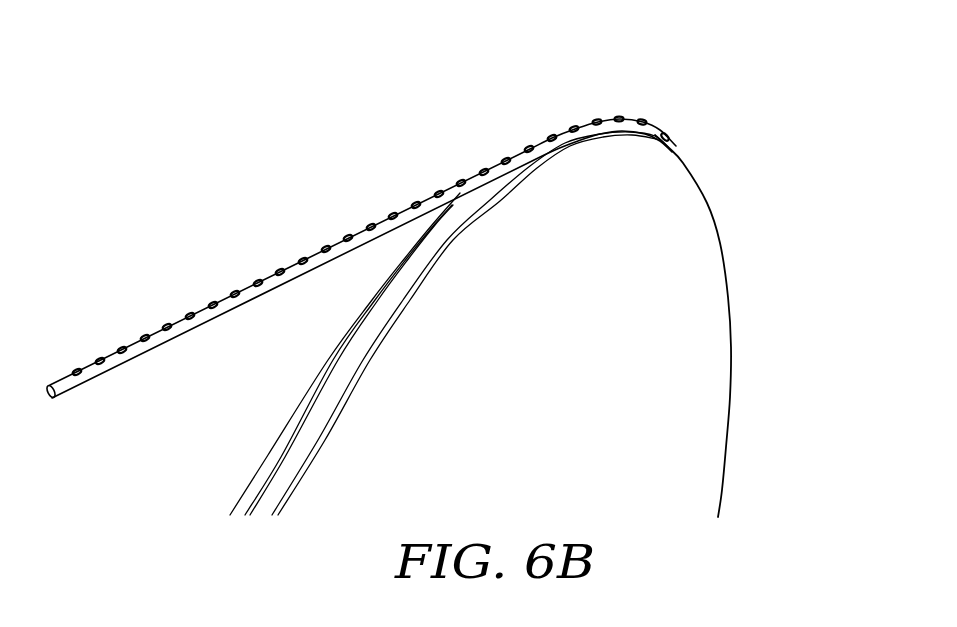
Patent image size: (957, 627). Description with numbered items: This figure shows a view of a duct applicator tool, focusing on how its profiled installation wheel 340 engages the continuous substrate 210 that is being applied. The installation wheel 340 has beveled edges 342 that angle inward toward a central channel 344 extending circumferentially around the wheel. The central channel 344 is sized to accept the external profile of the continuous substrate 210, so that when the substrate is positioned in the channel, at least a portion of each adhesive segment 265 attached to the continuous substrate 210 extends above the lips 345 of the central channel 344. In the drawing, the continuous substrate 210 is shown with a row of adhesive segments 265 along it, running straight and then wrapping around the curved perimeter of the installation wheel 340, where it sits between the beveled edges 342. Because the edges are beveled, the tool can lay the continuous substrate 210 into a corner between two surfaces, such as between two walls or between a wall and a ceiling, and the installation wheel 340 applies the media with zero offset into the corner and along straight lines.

The continuous substrate 210 is at (203, 313).
The adhesive segment 265 is at (393, 213).
The installation wheel 340 is at (692, 249).
The beveled edges 342 is at (312, 478).
The central channel 344 is at (330, 390).
The lips 345 is at (570, 148).